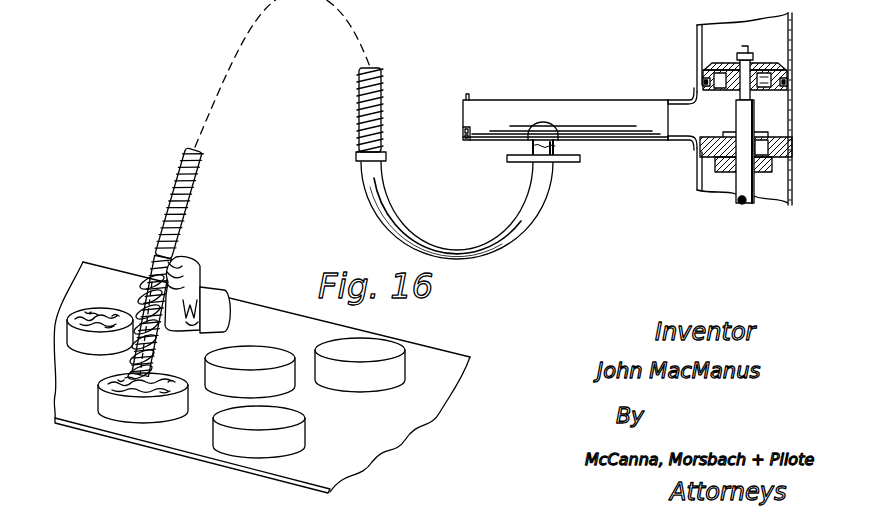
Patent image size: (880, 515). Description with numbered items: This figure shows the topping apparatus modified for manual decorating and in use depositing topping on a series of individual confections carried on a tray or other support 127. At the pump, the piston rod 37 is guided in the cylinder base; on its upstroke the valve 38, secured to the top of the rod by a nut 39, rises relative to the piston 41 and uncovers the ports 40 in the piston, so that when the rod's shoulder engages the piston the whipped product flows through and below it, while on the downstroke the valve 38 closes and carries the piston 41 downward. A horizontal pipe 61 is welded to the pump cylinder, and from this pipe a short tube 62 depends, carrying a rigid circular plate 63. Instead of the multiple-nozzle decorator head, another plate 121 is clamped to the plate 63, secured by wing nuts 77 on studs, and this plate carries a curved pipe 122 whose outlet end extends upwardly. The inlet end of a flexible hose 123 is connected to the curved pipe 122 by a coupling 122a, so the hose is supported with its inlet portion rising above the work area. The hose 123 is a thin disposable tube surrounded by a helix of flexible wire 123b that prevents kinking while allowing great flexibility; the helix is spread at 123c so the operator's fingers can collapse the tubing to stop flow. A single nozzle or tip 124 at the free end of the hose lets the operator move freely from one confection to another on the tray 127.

The piston rod 37 is at (737, 198).
The valve 38 is at (776, 66).
The nut 39 is at (752, 62).
The ports 40 is at (764, 88).
The piston 41 is at (793, 98).
The horizontal pipe 61 is at (525, 100).
The short tube 62 is at (558, 143).
The rigid circular plate 63 is at (510, 152).
The wing nuts 77 is at (558, 163).
The plate 121 is at (520, 162).
The curved pipe 122 is at (512, 234).
The coupling 122a is at (386, 155).
The flexible hose 123 is at (193, 216).
The helix of flexible wire 123b is at (378, 68).
The expanded helix portion 123c is at (153, 356).
The nozzle 124 is at (132, 378).
The tray 127 is at (368, 440).